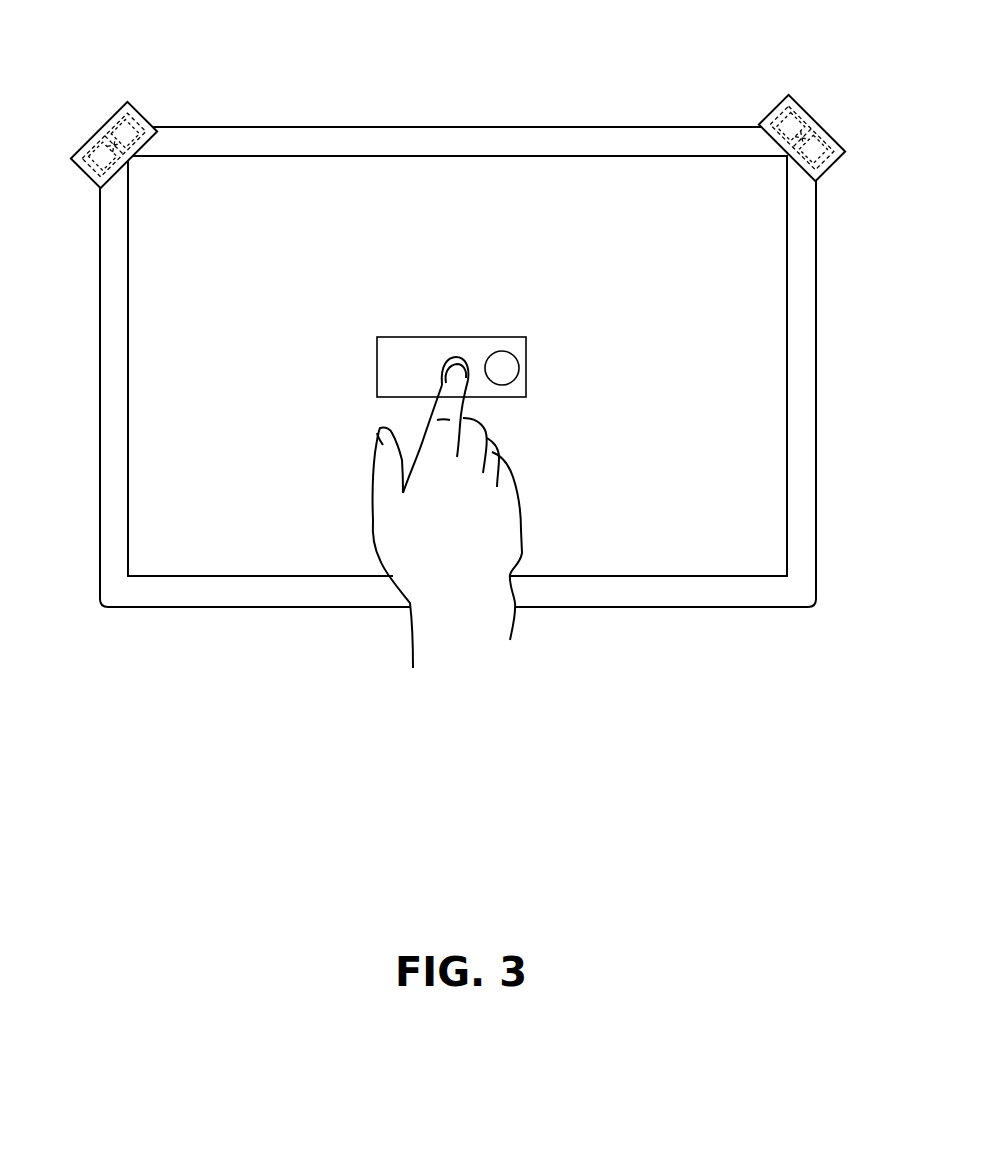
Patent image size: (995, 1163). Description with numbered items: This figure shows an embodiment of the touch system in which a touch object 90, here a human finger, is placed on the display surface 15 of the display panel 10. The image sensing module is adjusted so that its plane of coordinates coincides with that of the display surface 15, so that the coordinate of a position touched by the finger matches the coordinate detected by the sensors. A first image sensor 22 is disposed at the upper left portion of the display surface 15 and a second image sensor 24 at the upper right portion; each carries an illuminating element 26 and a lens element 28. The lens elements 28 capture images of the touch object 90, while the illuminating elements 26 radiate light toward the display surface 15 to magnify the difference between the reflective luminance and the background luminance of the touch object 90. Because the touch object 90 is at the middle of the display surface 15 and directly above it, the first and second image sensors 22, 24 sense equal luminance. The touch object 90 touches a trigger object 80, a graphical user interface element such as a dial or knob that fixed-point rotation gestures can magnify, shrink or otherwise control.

The display panel 10 is at (445, 137).
The display surface 15 is at (567, 177).
The first image sensor 22 is at (122, 102).
The second image sensor 24 is at (790, 95).
The illuminating element 26 is at (153, 113).
The lens element 28 is at (87, 137).
The trigger object 80 is at (520, 348).
The touch object 90 is at (440, 367).